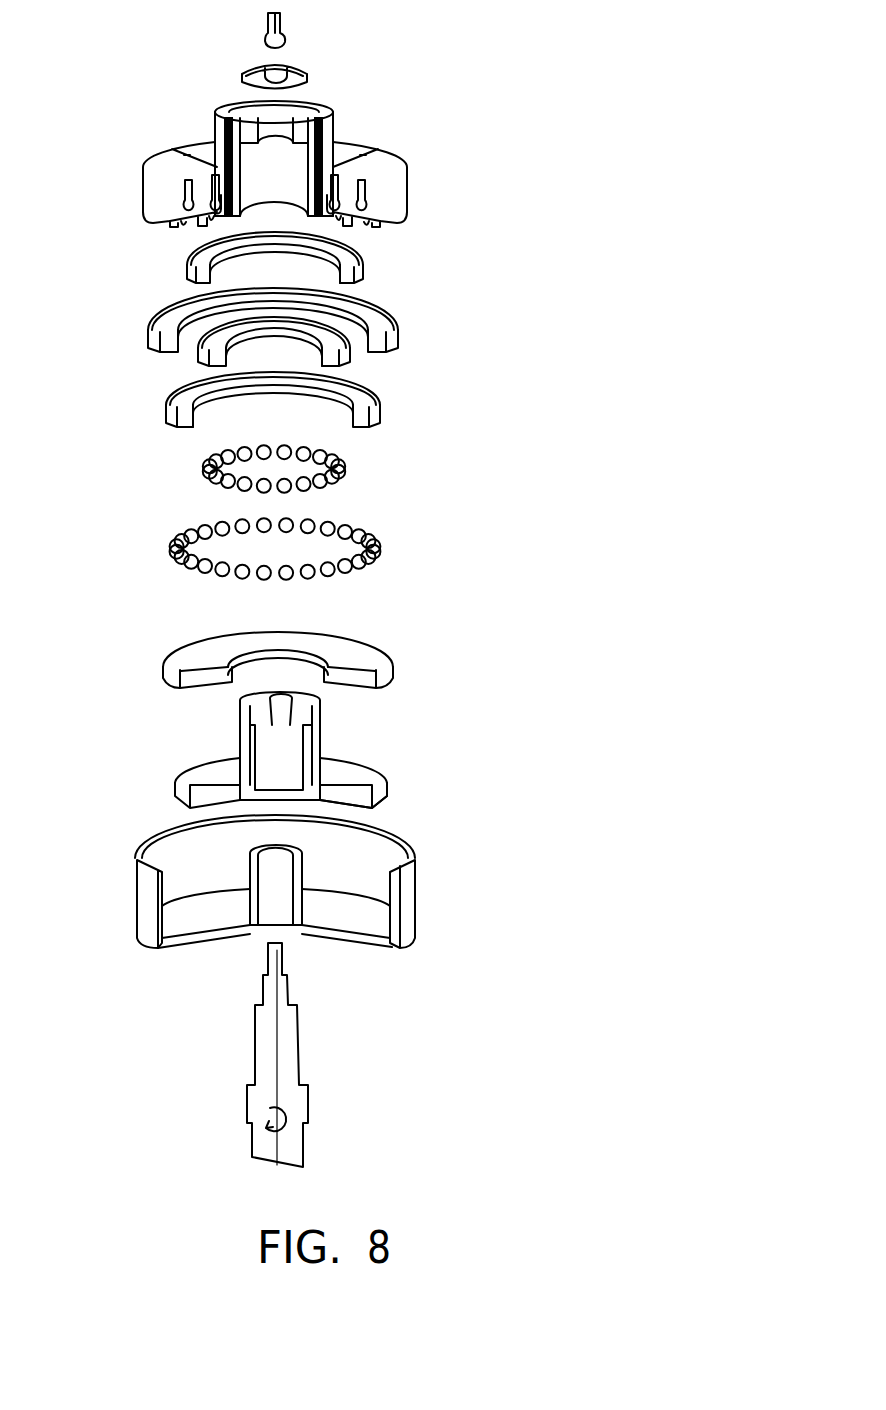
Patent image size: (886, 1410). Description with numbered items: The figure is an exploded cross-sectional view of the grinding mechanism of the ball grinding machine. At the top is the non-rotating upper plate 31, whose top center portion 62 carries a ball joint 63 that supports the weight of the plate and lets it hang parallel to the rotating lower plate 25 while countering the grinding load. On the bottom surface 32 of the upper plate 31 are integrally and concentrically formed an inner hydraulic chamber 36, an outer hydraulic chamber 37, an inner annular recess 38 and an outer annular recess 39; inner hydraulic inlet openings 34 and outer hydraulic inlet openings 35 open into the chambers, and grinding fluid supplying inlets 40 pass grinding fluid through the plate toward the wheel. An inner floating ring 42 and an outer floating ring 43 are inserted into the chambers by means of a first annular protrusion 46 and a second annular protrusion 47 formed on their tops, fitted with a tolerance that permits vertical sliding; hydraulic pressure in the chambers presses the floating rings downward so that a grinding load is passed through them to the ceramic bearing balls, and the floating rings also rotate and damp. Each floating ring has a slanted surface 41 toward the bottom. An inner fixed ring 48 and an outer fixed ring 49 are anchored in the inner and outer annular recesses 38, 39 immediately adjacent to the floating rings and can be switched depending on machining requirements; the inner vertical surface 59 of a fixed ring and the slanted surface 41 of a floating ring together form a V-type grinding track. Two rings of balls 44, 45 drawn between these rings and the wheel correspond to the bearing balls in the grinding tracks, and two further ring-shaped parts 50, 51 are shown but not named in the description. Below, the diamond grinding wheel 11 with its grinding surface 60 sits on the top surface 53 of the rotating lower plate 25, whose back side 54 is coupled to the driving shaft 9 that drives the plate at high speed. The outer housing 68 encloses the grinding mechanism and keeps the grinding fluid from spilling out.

The driving shaft 9 is at (284, 1040).
The diamond grinding wheel 11 is at (392, 682).
The rotating lower plate 25 is at (320, 738).
The non-rotating upper plate 31 is at (293, 185).
The bottom surface 32 is at (385, 232).
The inner hydraulic inlet openings 34 is at (212, 173).
The outer hydraulic inlet openings 35 is at (183, 178).
The inner hydraulic chamber 36 is at (338, 174).
The outer hydraulic chamber 37 is at (368, 205).
The inner annular recess 38 is at (200, 234).
The outer annular recess 39 is at (176, 226).
The grinding fluid supplying inlets 40 is at (368, 137).
The slanted surface 41 is at (170, 422).
The inner floating ring 42 is at (277, 343).
The outer floating ring 43 is at (280, 388).
The ball bearing ring 44 is at (347, 473).
The ball bearing ring 45 is at (383, 548).
The first annular protrusion 46 is at (270, 398).
The second annular protrusion 47 is at (288, 413).
The inner fixed ring 48 is at (362, 278).
The outer fixed ring 49 is at (368, 352).
The upper ring 50 is at (335, 272).
The large ring 51 is at (332, 323).
The top surface 53 is at (355, 775).
The back side 54 is at (353, 813).
The inner vertical surface 59 is at (350, 278).
The grinding surface 60 is at (351, 646).
The top center portion 62 is at (325, 78).
The ball joint 63 is at (369, 54).
The outer housing 68 is at (403, 903).